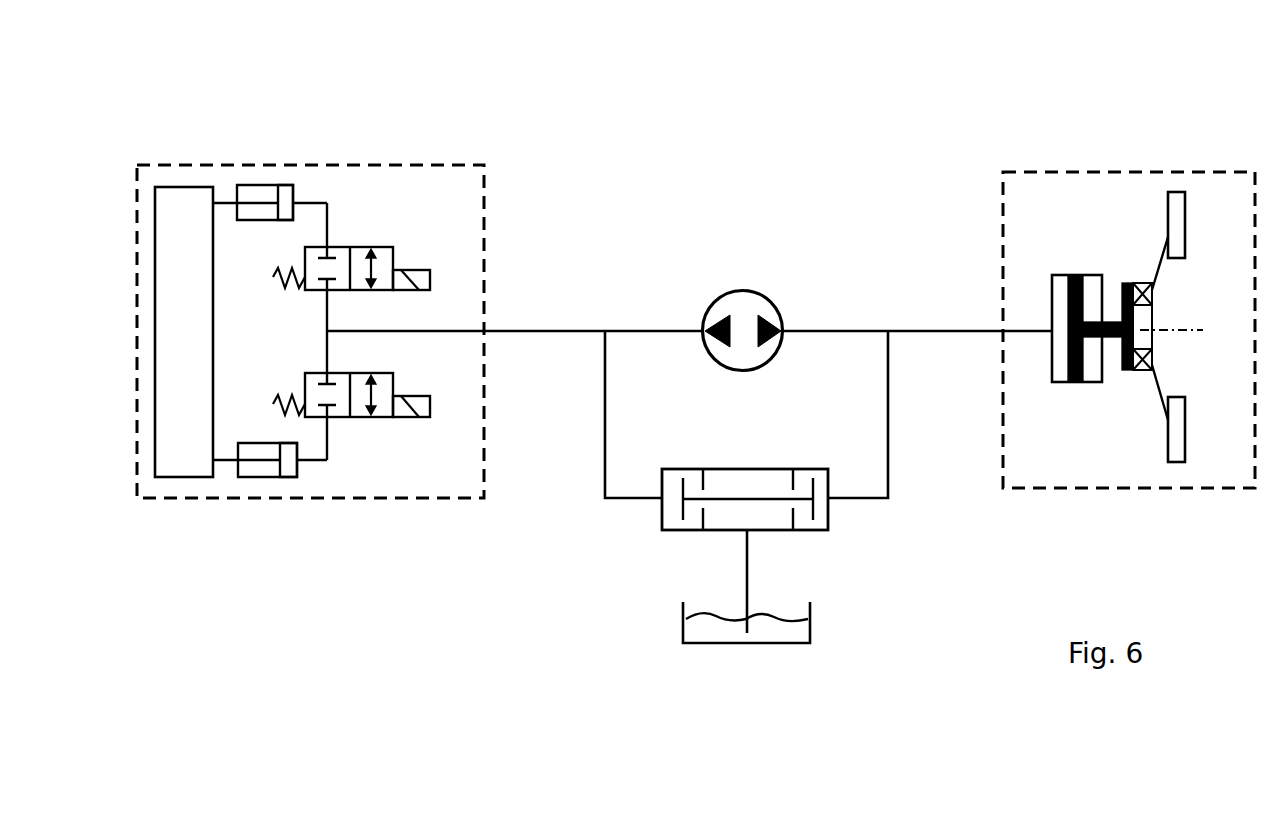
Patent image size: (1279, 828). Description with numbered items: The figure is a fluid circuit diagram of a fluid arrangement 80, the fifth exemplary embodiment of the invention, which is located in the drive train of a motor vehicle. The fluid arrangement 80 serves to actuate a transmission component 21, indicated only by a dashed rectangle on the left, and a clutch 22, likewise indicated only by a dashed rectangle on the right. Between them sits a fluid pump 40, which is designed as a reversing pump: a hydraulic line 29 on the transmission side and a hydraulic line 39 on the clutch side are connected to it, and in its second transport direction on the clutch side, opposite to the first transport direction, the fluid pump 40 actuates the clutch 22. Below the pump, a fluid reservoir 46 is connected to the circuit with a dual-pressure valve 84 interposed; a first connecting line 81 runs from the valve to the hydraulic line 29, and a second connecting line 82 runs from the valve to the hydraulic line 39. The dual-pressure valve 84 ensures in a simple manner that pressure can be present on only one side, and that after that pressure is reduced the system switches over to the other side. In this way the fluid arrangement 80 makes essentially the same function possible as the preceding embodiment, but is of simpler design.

The fluid arrangement 80 is at (1148, 88).
The transmission component 21 is at (310, 312).
The clutch 22 is at (1129, 310).
The hydraulic line 29 is at (568, 330).
The hydraulic line 39 is at (935, 331).
The fluid pump 40 is at (743, 290).
The fluid reservoir 46 is at (725, 647).
The first connecting line 81 is at (605, 452).
The second connecting line 82 is at (888, 465).
The dual-pressure valve 84 is at (830, 517).